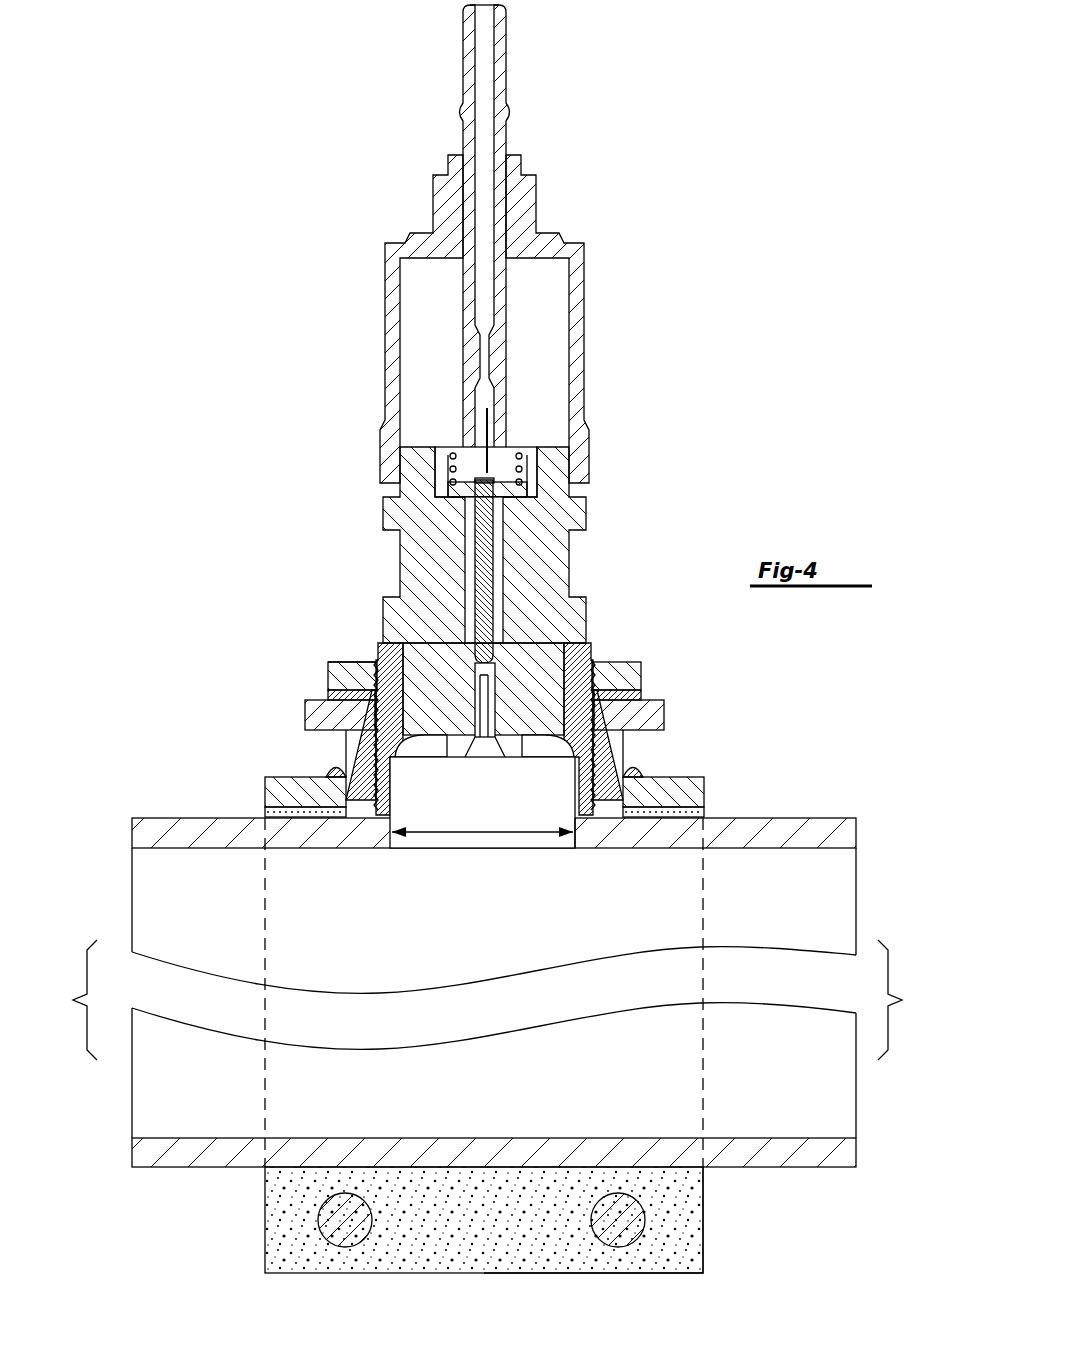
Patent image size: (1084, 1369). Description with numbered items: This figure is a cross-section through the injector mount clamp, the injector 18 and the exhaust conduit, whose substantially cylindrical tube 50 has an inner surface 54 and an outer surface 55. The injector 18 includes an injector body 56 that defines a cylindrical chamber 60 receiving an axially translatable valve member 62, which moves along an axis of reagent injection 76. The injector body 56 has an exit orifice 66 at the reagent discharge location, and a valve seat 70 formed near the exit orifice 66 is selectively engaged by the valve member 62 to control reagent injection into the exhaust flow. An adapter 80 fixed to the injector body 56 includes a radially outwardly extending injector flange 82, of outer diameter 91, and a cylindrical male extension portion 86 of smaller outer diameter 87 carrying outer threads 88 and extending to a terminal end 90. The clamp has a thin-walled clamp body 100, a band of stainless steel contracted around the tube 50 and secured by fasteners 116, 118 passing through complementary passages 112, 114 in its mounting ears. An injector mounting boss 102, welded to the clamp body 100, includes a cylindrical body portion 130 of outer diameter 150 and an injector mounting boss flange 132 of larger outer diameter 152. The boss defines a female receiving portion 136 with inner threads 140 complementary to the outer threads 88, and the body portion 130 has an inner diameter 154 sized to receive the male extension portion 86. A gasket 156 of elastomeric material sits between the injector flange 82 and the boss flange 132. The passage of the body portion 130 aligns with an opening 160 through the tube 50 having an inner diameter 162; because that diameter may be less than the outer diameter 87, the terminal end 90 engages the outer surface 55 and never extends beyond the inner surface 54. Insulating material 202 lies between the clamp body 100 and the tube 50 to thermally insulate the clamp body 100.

The injector 18 is at (706, 414).
The cylindrical tube 50 is at (856, 1170).
The inner surface 54 is at (775, 852).
The outer surface 55 is at (796, 1172).
The injector body 56 is at (566, 488).
The cylindrical chamber 60 is at (467, 563).
The valve member 62 is at (487, 573).
The exit orifice 66 is at (497, 748).
The valve seat 70 is at (462, 745).
The axis of reagent injection 76 is at (489, 415).
The adapter 80 is at (607, 670).
The injector flange 82 is at (644, 680).
The cylindrical male extension portion 86 is at (395, 740).
The outer diameter 87 is at (367, 788).
The outer threads 88 is at (601, 717).
The terminal end 90 is at (582, 823).
The outer diameter 91 is at (257, 680).
The clamp body 100 is at (604, 788).
The injector mounting boss 102 is at (353, 733).
The passage 112 is at (330, 1233).
The passage 114 is at (632, 1233).
The fastener 116 is at (343, 1222).
The fastener 118 is at (620, 1222).
The cylindrical body portion 130 is at (336, 770).
The injector mounting boss flange 132 is at (325, 707).
The female receiving portion 136 is at (379, 780).
The inner threads 140 is at (397, 720).
The outer diameter 150 is at (626, 748).
The outer diameter 152 is at (299, 730).
The inner diameter 154 is at (367, 717).
The gasket 156 is at (345, 662).
The opening 160 is at (560, 840).
The inner diameter 162 is at (472, 836).
The insulating material 202 is at (693, 812).